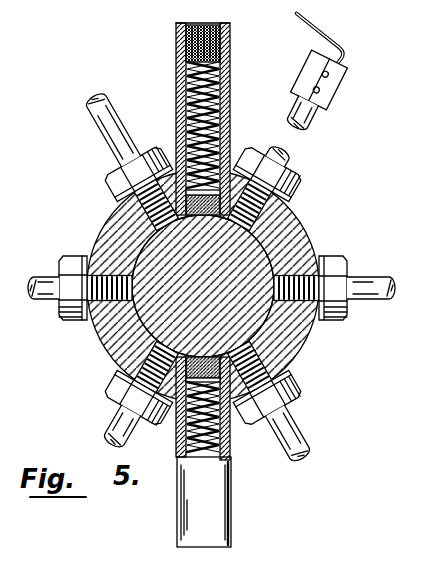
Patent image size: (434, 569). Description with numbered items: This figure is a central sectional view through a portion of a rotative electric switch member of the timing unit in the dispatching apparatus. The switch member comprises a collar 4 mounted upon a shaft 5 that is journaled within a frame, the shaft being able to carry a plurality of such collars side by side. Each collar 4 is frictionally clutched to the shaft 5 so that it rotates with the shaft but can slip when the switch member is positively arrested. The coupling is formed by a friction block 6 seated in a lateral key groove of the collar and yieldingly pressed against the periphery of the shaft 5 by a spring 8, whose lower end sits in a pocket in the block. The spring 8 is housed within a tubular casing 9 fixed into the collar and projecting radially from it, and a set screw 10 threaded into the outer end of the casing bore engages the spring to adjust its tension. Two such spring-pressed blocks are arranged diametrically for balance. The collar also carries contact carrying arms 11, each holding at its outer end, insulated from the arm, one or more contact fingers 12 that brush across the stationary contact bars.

The collar 4 is at (299, 213).
The shaft 5 is at (257, 260).
The friction block 6 is at (135, 207).
The spring 8 is at (232, 73).
The tubular casing 9 is at (231, 113).
The set screw 10 is at (231, 41).
The contact carrying arm 11 is at (103, 120).
The contact finger 12 is at (332, 33).